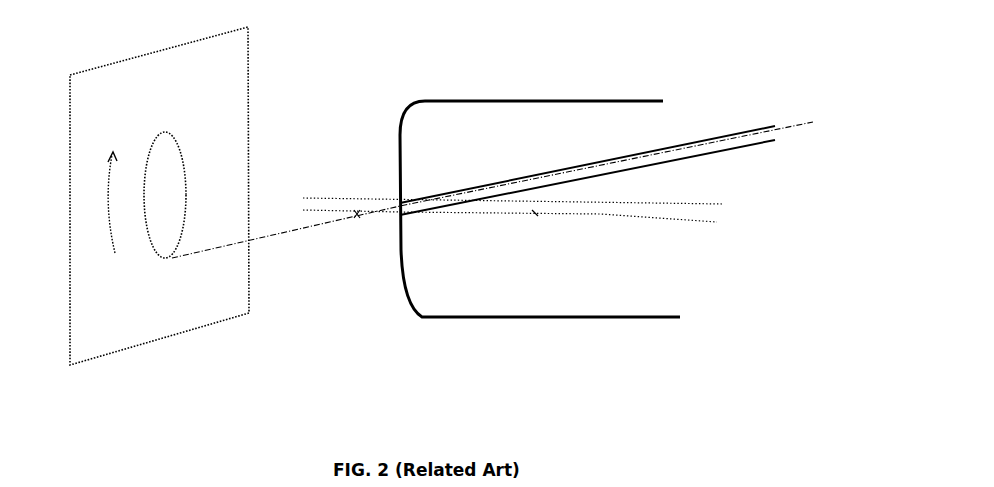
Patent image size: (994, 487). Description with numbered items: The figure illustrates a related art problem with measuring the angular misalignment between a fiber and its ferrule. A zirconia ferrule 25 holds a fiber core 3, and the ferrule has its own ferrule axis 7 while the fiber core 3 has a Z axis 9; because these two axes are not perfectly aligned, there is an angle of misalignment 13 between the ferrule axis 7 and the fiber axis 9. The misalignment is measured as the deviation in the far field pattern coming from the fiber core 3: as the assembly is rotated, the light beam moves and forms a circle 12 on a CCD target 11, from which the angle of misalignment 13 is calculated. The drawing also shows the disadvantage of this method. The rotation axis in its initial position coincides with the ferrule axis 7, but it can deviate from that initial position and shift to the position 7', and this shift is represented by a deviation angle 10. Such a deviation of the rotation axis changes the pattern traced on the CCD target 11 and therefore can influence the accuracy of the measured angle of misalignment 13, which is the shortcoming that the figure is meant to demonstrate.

The fiber core 3 is at (655, 148).
The ferrule axis 7 is at (546, 281).
The shifted rotation axis position 7' is at (531, 321).
The Z axis 9 is at (785, 128).
The deviation angle 10 is at (535, 213).
The CCD target 11 is at (237, 125).
The circle 12 is at (150, 243).
The angle of misalignment 13 is at (357, 218).
The zirconia ferrule 25 is at (500, 318).